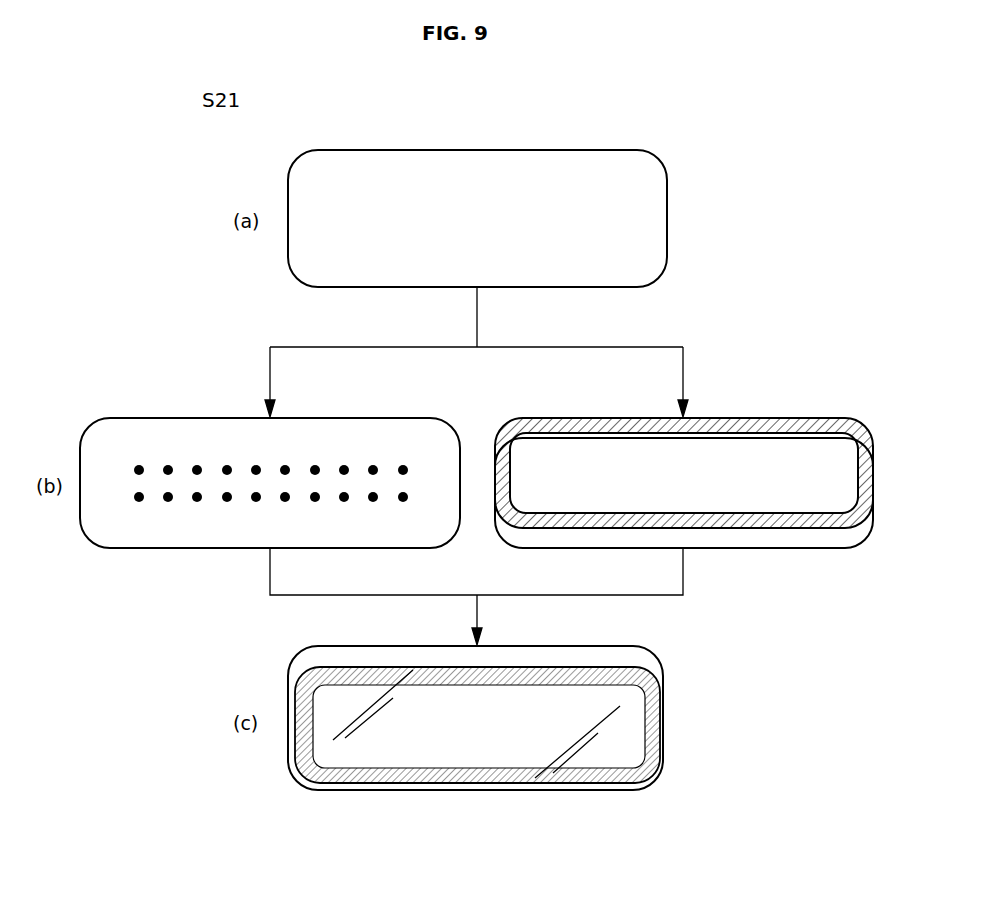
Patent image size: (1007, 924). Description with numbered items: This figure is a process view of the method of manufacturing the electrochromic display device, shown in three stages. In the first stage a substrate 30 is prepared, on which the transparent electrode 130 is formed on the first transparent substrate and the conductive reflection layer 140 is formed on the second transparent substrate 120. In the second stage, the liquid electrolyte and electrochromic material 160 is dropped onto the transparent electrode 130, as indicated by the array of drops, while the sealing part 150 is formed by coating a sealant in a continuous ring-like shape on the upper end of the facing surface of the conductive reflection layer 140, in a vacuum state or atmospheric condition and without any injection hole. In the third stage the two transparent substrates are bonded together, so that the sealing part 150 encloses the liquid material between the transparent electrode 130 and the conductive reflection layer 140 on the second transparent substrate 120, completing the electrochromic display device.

The base material block 30 is at (656, 212).
The transparent electrode 130 is at (105, 432).
The liquid electrolyte and electrochromic material 160 is at (227, 462).
The conductive reflection layer 140 is at (720, 462).
The sealing part 150 is at (815, 420).
The second transparent substrate 120 is at (627, 730).